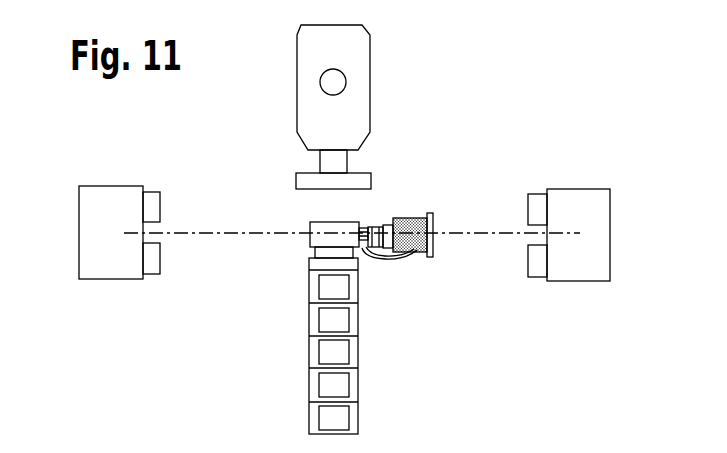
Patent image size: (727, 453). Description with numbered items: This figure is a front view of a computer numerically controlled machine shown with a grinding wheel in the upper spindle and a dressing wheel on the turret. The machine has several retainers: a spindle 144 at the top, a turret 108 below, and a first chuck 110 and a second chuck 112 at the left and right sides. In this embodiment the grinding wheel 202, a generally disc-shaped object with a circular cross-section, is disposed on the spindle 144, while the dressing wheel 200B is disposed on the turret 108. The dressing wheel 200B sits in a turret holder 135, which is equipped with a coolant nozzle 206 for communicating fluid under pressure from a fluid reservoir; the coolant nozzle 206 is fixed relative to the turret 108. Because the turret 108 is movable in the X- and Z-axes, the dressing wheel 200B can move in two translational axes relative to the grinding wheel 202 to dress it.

The spindle 144 is at (362, 82).
The grinding wheel 202 is at (370, 182).
The first chuck 110 is at (82, 207).
The second chuck 112 is at (562, 189).
The turret holder 135 is at (307, 240).
The turret 108 is at (310, 387).
The coolant nozzle 206 is at (373, 257).
The dressing wheel 200B is at (415, 256).